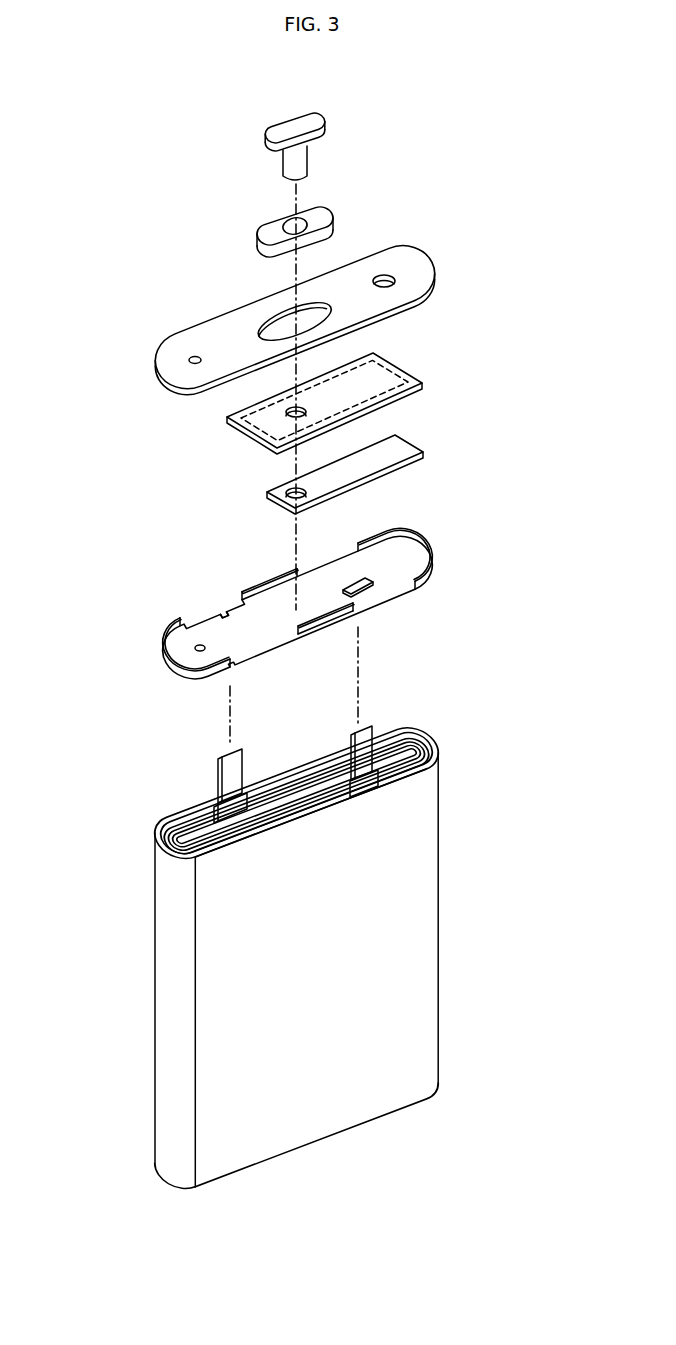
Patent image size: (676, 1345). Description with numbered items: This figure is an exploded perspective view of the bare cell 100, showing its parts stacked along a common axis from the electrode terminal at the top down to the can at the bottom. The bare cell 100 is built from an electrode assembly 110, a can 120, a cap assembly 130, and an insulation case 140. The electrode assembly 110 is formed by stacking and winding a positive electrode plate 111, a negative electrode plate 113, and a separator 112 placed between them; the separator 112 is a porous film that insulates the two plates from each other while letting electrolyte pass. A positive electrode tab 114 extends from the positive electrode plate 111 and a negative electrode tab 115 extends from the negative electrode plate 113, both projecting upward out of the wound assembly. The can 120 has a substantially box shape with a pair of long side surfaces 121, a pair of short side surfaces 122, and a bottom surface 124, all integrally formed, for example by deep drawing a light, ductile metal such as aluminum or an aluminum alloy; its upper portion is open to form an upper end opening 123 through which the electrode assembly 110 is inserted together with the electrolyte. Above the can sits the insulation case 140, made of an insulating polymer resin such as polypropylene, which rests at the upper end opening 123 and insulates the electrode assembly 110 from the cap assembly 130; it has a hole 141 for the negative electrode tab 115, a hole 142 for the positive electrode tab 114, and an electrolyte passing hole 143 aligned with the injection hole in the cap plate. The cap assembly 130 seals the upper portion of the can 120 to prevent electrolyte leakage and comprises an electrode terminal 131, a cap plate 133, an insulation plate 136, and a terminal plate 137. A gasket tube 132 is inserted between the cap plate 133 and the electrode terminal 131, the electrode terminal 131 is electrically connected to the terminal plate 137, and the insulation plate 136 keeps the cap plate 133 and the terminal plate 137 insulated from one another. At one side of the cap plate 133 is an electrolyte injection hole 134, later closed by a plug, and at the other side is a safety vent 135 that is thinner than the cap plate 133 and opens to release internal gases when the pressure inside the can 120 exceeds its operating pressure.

The bare cell 100 is at (102, 113).
The electrode assembly 110 is at (485, 717).
The positive electrode plate 111 is at (440, 749).
The separator 112 is at (402, 748).
The negative electrode plate 113 is at (385, 755).
The positive electrode tab 114 is at (230, 773).
The negative electrode tab 115 is at (367, 747).
The can 120 is at (440, 912).
The long side surfaces 121 is at (353, 1115).
The short side surfaces 122 is at (167, 1012).
The upper end opening 123 is at (178, 835).
The bottom surface 124 is at (287, 1158).
The cap assembly 130 is at (512, 145).
The electrode terminal 131 is at (320, 125).
The gasket tube 132 is at (274, 221).
The cap plate 133 is at (422, 266).
The electrolyte injection hole 134 is at (194, 357).
The safety vent 135 is at (387, 275).
The insulation plate 136 is at (403, 373).
The terminal plate 137 is at (403, 433).
The insulation case 140 is at (162, 662).
The hole for a negative electrode tab 141 is at (350, 577).
The hole for a positive electrode tab 142 is at (212, 620).
The electrolyte passing hole 143 is at (198, 653).